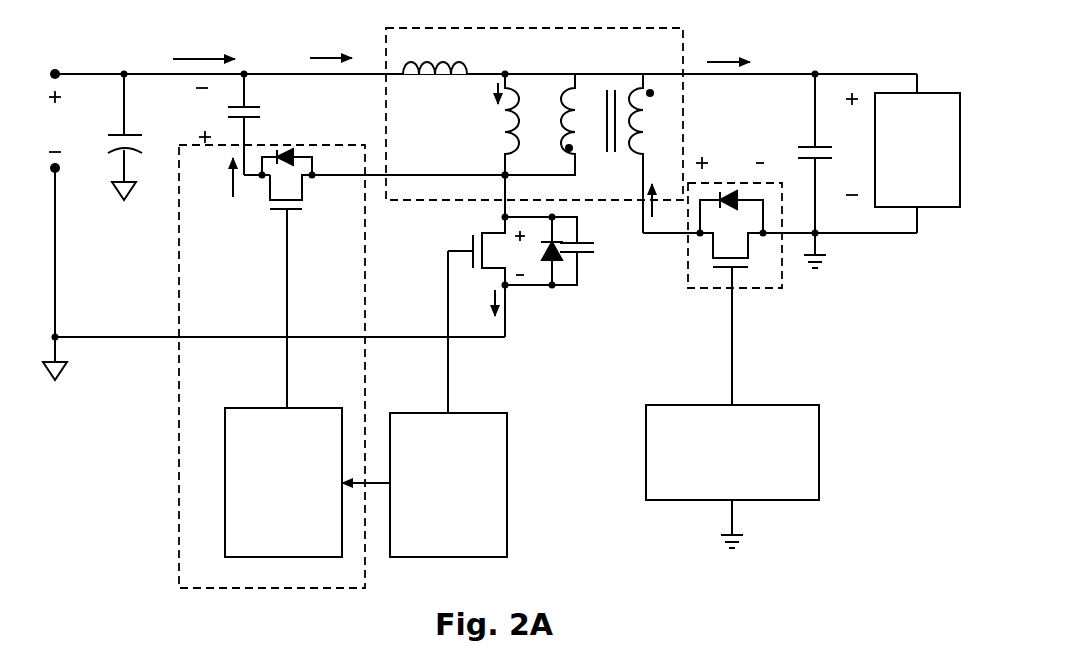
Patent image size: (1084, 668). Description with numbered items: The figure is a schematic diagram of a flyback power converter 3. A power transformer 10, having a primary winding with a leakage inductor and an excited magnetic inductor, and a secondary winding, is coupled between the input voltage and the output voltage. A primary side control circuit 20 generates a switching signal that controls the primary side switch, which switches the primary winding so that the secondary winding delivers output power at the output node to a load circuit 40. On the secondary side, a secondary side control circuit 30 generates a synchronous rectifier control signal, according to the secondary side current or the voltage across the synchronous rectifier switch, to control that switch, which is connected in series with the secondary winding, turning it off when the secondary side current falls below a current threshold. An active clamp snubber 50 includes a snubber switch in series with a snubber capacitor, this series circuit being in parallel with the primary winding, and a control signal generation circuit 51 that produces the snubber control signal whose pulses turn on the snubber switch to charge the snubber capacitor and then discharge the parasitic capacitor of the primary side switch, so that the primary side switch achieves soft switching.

The flyback power converter 3 is at (125, 30).
The power transformer 10 is at (646, 58).
The primary side control circuit 20 is at (437, 549).
The secondary side control circuit 30 is at (654, 433).
The load circuit 40 is at (906, 203).
The active clamp snubber 50 is at (189, 581).
The control signal generation circuit 51 is at (272, 549).